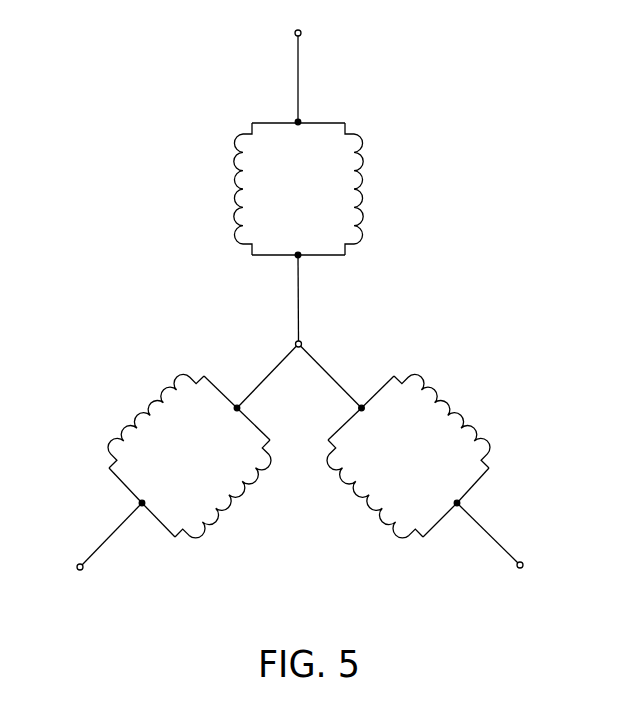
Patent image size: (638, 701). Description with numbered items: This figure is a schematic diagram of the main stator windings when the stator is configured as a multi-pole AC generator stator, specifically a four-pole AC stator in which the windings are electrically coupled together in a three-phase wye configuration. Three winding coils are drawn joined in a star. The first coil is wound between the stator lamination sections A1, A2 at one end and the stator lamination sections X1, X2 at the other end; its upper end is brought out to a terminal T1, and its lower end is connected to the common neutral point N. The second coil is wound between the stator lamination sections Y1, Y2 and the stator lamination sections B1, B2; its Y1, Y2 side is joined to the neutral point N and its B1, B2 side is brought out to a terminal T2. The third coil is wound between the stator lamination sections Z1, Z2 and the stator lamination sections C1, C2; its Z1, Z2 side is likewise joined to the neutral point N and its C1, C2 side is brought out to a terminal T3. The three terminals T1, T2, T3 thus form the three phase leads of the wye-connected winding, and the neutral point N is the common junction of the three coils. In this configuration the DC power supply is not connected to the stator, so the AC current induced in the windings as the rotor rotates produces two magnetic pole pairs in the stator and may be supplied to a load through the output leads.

The first line terminal T1 is at (306, 67).
The second line terminal T2 is at (100, 550).
The third line terminal T3 is at (501, 550).
The neutral (star) point N is at (299, 331).
The stator lamination section A1 is at (257, 182).
The stator lamination section A2 is at (341, 182).
The stator lamination section X1 is at (257, 254).
The stator lamination section X2 is at (341, 254).
The stator lamination section Y1 is at (172, 405).
The stator lamination section Y2 is at (233, 473).
The stator lamination section B1 is at (112, 475).
The stator lamination section B2 is at (169, 531).
The stator lamination section Z1 is at (426, 405).
The stator lamination section Z2 is at (365, 473).
The stator lamination section C1 is at (486, 475).
The stator lamination section C2 is at (429, 531).